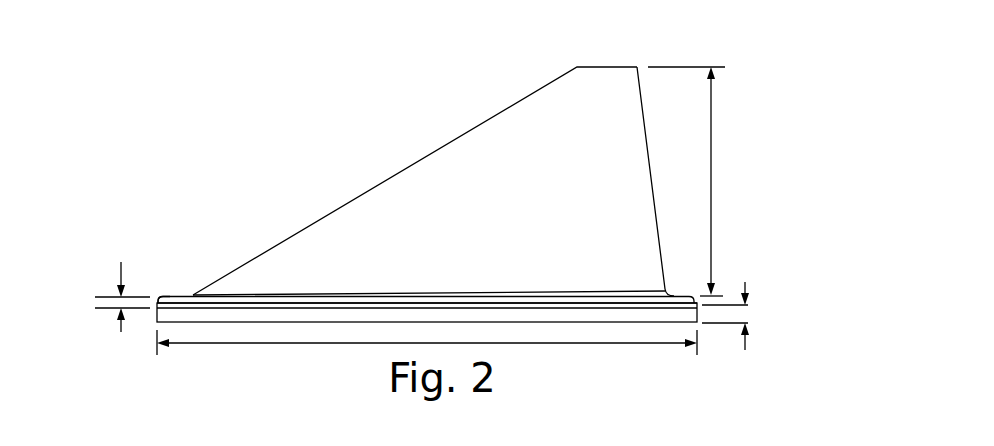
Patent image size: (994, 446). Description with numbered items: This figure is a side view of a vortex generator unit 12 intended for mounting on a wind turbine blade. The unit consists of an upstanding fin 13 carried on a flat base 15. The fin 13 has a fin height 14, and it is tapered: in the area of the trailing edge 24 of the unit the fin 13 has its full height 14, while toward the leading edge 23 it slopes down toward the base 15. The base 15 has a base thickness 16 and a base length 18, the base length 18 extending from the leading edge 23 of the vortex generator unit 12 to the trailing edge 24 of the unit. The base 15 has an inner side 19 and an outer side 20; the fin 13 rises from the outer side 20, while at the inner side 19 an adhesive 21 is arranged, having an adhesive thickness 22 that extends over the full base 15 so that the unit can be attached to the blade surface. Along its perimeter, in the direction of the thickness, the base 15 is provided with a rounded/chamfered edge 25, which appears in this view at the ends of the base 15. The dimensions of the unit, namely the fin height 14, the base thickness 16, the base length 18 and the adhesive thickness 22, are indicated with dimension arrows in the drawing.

The vortex generator unit 12 is at (416, 148).
The fin 13 is at (555, 208).
The fin height 14 is at (712, 155).
The base 15 is at (182, 303).
The base thickness 16 is at (121, 272).
The base length 18 is at (562, 343).
The inner side of the base 19 is at (612, 318).
The outer side of the base 20 is at (407, 295).
The adhesive 21 is at (307, 310).
The adhesive thickness 22 is at (747, 290).
The leading edge 23 is at (132, 231).
The trailing edge 24 is at (689, 234).
The rounded/chamfered edge 25 is at (156, 294).